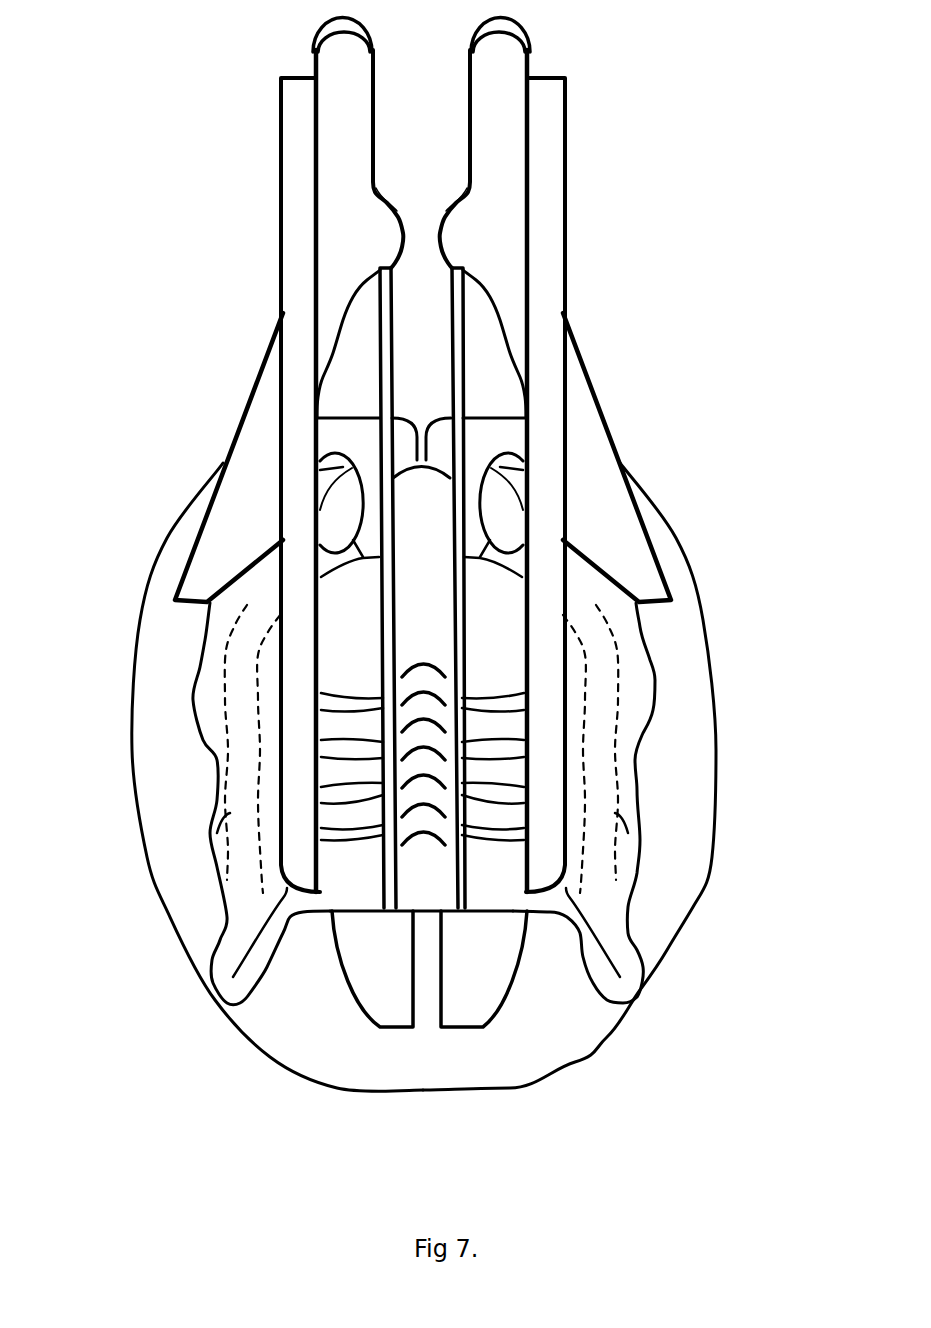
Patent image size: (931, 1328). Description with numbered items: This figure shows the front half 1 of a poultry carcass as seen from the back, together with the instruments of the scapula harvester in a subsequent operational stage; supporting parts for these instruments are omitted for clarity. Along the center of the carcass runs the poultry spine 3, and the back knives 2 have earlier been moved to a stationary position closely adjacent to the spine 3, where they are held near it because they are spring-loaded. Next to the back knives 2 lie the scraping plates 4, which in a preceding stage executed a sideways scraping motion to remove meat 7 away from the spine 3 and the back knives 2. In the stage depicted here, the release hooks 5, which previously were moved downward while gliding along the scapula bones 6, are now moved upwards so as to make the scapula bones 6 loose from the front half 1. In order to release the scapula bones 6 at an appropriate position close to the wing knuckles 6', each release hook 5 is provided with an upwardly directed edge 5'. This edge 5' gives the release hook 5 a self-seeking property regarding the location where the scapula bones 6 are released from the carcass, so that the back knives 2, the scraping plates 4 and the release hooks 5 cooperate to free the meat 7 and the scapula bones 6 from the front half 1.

The front half 1 is at (699, 660).
The back knives 2 is at (392, 918).
The poultry spine 3 is at (430, 884).
The scraping plates 4 is at (308, 852).
The release hooks 5 is at (405, 485).
The upwardly directed edge 5' is at (426, 462).
The scapula bones 6 is at (428, 521).
The wing knuckles 6' is at (452, 474).
The meat 7 is at (204, 682).